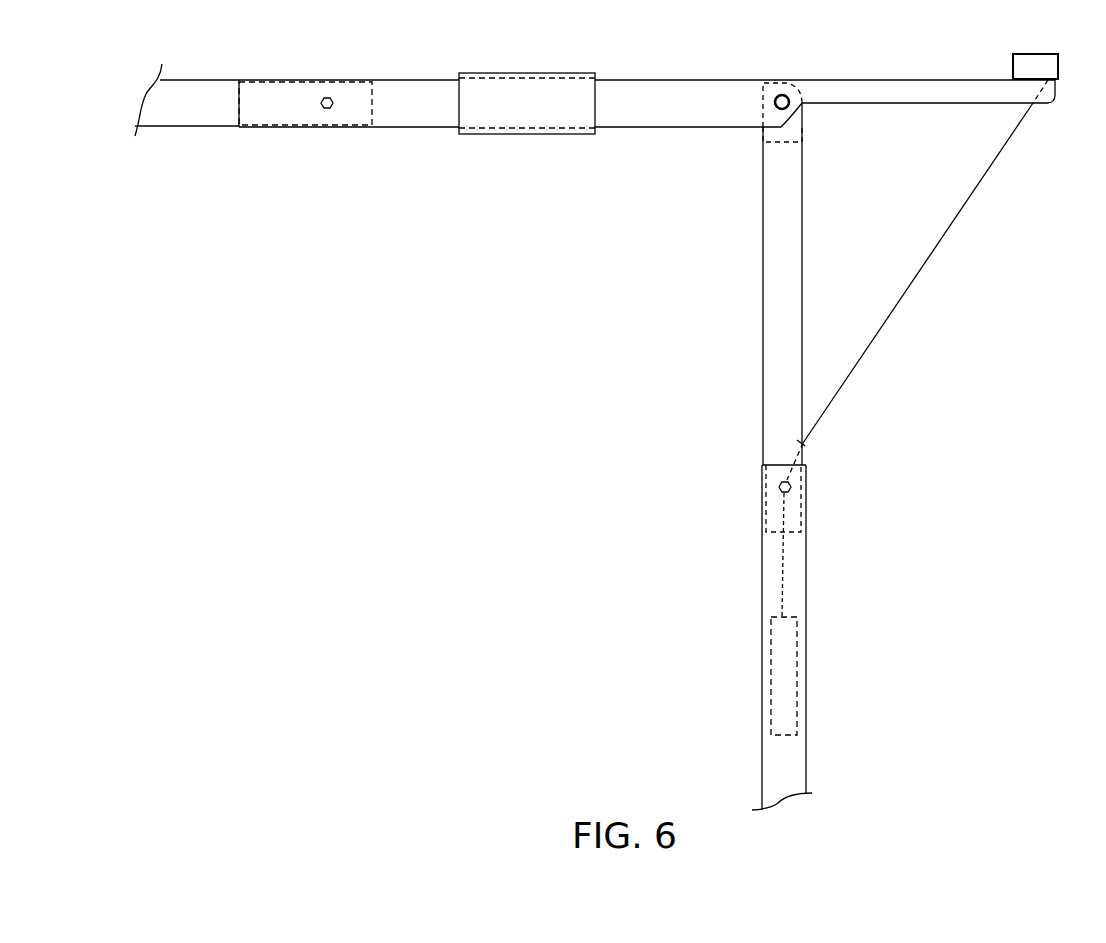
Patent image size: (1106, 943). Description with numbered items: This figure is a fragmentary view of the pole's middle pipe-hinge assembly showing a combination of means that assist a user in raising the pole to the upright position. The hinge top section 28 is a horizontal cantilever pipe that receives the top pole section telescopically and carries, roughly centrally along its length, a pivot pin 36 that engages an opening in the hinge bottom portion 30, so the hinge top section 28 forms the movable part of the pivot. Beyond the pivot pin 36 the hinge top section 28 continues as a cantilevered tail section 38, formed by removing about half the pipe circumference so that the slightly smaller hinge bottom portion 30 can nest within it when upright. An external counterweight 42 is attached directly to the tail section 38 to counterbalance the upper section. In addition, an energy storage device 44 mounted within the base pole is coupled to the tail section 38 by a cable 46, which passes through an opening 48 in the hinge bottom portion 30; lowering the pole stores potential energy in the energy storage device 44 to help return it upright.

The hinge top section 28 is at (668, 152).
The hinge bottom portion 30 is at (721, 235).
The pivot pin 36 is at (782, 94).
The cantilevered tail section 38 is at (925, 80).
The counterweight 42 is at (1059, 58).
The energy storage device 44 is at (790, 677).
The cable 46 is at (1000, 152).
The opening 48 is at (803, 443).